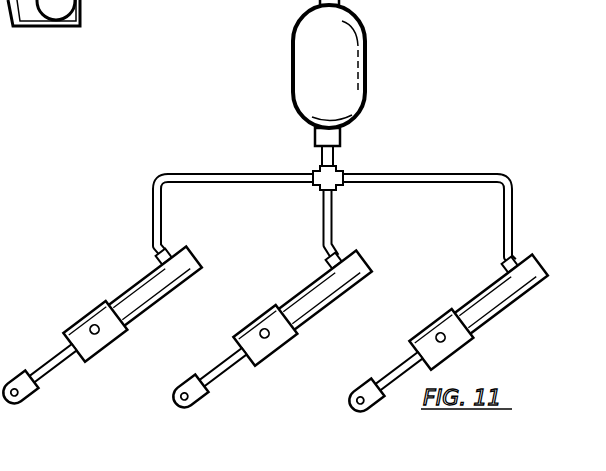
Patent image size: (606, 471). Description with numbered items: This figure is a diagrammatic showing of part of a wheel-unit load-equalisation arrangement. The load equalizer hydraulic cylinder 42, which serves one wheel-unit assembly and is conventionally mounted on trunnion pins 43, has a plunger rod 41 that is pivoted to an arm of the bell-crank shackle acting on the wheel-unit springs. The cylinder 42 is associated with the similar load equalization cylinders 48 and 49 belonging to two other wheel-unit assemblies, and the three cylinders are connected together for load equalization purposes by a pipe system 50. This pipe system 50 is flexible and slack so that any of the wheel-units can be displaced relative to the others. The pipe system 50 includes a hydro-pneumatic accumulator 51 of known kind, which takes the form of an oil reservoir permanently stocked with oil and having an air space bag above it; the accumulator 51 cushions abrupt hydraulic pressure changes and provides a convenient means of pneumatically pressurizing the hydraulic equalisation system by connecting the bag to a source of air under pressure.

The plunger rod 41 is at (55, 371).
The load equalizer hydraulic cylinder 42 is at (198, 263).
The trunnion pins 43 is at (108, 345).
The load equalization cylinder 48 is at (366, 259).
The load equalization cylinder 49 is at (501, 281).
The pipe system 50 is at (216, 173).
The hydro-pneumatic accumulator 51 is at (363, 44).